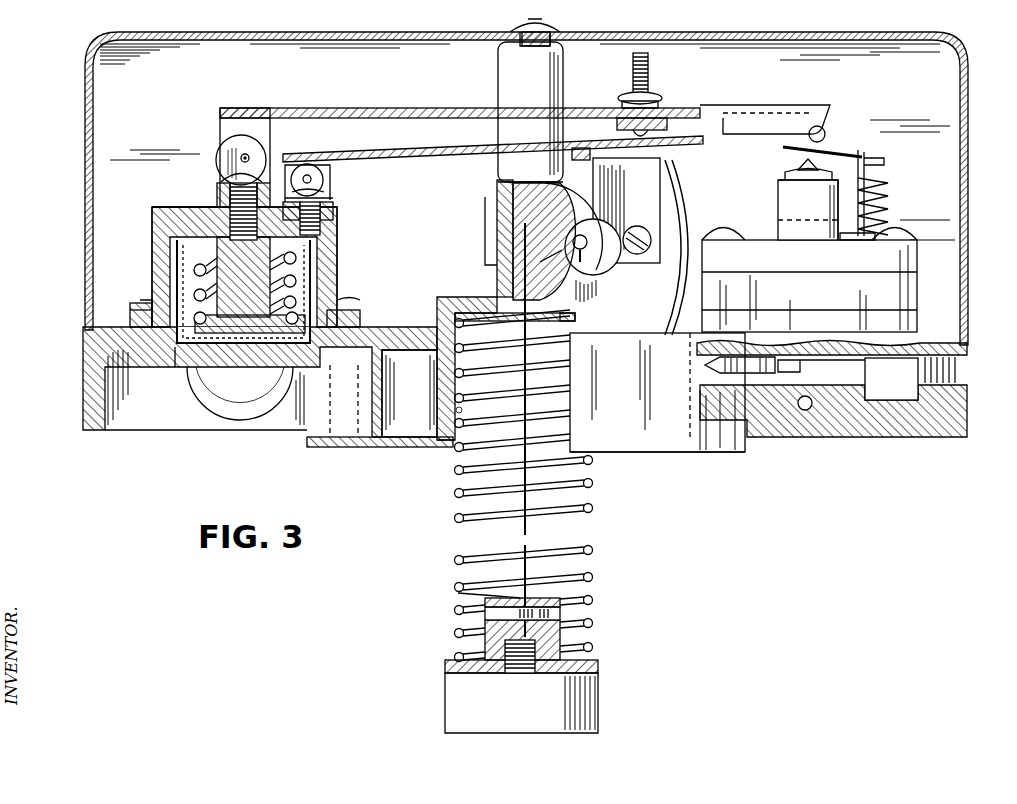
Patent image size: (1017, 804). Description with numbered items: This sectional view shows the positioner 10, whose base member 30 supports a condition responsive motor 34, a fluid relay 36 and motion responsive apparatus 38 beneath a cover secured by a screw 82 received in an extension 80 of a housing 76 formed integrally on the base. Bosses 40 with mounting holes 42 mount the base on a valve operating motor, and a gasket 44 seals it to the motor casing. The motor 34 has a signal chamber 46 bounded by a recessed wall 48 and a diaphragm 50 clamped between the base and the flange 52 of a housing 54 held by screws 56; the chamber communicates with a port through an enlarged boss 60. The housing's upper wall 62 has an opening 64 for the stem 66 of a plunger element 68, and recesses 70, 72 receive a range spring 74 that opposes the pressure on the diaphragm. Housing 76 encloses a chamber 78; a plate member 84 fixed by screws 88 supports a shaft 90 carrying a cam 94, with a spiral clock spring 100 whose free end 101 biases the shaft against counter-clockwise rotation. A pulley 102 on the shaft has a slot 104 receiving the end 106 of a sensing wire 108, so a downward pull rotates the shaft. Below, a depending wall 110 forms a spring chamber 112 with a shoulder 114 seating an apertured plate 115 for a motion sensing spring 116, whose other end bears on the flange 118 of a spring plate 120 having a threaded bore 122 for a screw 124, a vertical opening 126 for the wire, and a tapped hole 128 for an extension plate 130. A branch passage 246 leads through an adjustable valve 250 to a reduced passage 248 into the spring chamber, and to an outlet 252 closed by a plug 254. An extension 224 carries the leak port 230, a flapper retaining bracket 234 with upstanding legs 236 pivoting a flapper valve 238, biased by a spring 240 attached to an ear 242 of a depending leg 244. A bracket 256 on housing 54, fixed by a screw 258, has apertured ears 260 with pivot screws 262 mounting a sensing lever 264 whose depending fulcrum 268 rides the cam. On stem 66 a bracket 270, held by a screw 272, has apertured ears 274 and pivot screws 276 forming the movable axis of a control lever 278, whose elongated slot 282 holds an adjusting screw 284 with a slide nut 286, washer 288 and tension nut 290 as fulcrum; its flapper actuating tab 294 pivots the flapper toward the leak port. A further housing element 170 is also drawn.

The positioner 10 is at (75, 60).
The base member 30 is at (83, 392).
The condition responsive motor 34 is at (150, 206).
The fluid relay 36 is at (893, 218).
The motion responsive apparatus 38 is at (490, 173).
The boss 40 is at (298, 430).
The mounting hole 42 is at (376, 451).
The gasket 44 is at (418, 446).
The signal chamber 46 is at (178, 352).
The recessed wall 48 is at (332, 368).
The diaphragm 50 is at (340, 310).
The flange 52 is at (132, 316).
The housing 54 is at (152, 227).
The screw 56 is at (146, 300).
The enlarged boss 60 is at (220, 388).
The upper wall 62 is at (172, 206).
The opening 64 is at (216, 206).
The stem 66 is at (293, 256).
The plunger element 68 is at (293, 299).
The recess 70 is at (237, 285).
The recess 72 is at (170, 242).
The range spring 74 is at (195, 291).
The housing 76 is at (496, 280).
The chamber 78 is at (533, 307).
The extension 80 is at (508, 74).
The screw 82 is at (541, 24).
The plate member 84 is at (635, 222).
The screw 88 is at (637, 256).
The shaft 90 is at (593, 247).
The cam 94 is at (592, 298).
The spiral clock spring 100 is at (676, 192).
The free end 101 is at (485, 203).
The pulley 102 is at (530, 212).
The slot 104 is at (592, 202).
The end 106 is at (540, 262).
The sensing wire 108 is at (495, 295).
The depending wall 110 is at (437, 376).
The spring chamber 112 is at (458, 412).
The shoulder 114 is at (448, 301).
The apertured plate 115 is at (576, 320).
The motion sensing spring 116 is at (592, 486).
The flange 118 is at (600, 670).
The spring plate 120 is at (568, 644).
The threaded bore 122 is at (565, 617).
The screw 124 is at (550, 600).
The vertical opening 126 is at (520, 598).
The tapped hole 128 is at (505, 652).
The extension plate 130 is at (580, 700).
The switch housing 170 is at (716, 238).
The extension 224 is at (778, 222).
The leak port 230 is at (803, 167).
The flapper retaining bracket 234 is at (784, 177).
The upstanding legs 236 is at (872, 155).
The flapper valve 238 is at (832, 153).
The spring 240 is at (886, 185).
The ear 242 is at (856, 241).
The depending leg 244 is at (838, 212).
The branch passage 246 is at (825, 378).
The passage 248 is at (715, 362).
The adjustable valve 250 is at (780, 370).
The outlet 252 is at (868, 405).
The plug 254 is at (968, 376).
The bracket 256 is at (333, 208).
The screw 258 is at (330, 193).
The apertured ears 260 is at (287, 165).
The pivot screw 262 is at (324, 180).
The sensing lever 264 is at (472, 150).
The depending fulcrum 268 is at (578, 160).
The bracket 270 is at (226, 184).
The screw 272 is at (228, 170).
The apertured ears 274 is at (236, 137).
The pivot screw 276 is at (249, 156).
The control lever 278 is at (266, 108).
The elongated slot 282 is at (470, 112).
The adjusting screw 284 is at (648, 72).
The slide nut 286 is at (667, 128).
The washer 288 is at (622, 104).
The tension nut 290 is at (656, 97).
The flapper actuating tab 294 is at (828, 128).